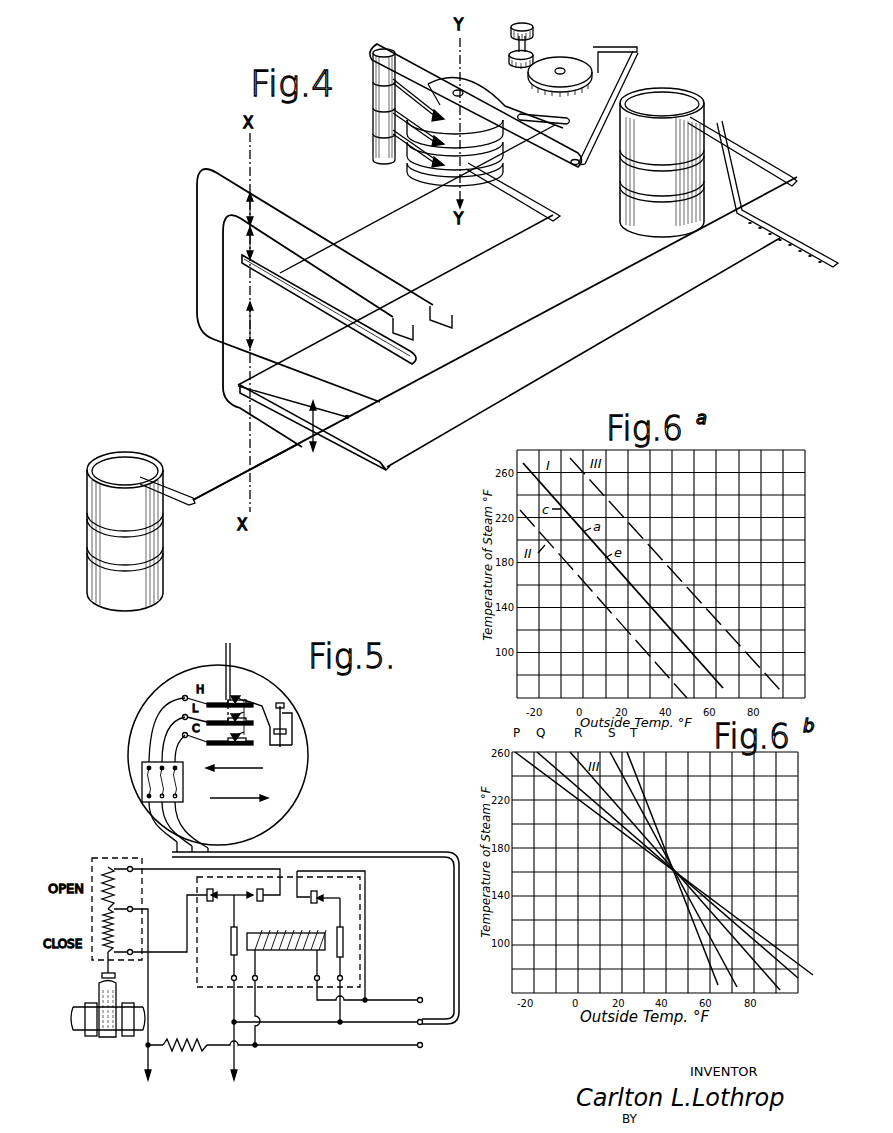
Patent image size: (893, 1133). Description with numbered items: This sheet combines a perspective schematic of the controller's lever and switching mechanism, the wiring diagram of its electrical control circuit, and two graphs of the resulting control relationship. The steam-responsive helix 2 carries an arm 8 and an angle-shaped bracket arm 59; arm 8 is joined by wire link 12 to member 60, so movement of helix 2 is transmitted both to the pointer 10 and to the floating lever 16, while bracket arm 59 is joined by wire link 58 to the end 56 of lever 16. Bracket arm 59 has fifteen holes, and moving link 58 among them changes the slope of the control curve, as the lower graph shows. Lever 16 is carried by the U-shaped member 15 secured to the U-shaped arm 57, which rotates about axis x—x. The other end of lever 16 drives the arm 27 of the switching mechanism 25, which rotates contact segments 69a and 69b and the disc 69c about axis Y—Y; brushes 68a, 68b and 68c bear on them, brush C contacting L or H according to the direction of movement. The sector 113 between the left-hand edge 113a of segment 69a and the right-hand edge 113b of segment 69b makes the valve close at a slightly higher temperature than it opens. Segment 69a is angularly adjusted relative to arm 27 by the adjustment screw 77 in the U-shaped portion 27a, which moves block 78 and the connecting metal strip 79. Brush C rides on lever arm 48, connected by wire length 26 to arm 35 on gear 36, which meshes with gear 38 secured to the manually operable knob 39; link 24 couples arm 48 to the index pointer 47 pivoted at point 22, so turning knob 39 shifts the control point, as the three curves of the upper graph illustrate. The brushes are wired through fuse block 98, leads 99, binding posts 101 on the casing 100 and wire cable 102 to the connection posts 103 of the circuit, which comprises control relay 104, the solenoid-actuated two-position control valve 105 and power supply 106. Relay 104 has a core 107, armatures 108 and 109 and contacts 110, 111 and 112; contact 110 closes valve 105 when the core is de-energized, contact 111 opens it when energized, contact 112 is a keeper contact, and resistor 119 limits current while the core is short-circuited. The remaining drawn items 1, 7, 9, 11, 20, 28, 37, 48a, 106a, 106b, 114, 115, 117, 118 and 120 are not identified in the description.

In FIG. 4, the bellows 1 is at (110, 452).
In FIG. 4, the helix 2 is at (474, 255).
In FIG. 4, the connecting strip 7 is at (176, 488).
In FIG. 4, the arm 8 is at (712, 127).
In FIG. 4, the frame top bar 9 is at (370, 270).
In FIG. 4, the pointer 10 is at (372, 302).
In FIG. 4, the plate edge 11 is at (256, 462).
In FIG. 4, the wire link 12 is at (570, 298).
In FIG. 4, the U-shaped member 15 is at (278, 430).
In FIG. 4, the floating lever 16 is at (354, 441).
In FIG. 4, the spacing dimension 20 is at (252, 223).
In FIG. 4, the pivot point 22 is at (252, 250).
In FIG. 4, the link 24 is at (373, 222).
In FIG. 4, the switching mechanism 25 is at (459, 54).
In FIG. 4, the wire length 26 is at (620, 78).
In FIG. 4, the arm 27 is at (530, 208).
In FIG. 5, the U-shaped portion 27a is at (294, 726).
In FIG. 4, the frame 28 is at (323, 226).
In FIG. 4, the arm 35 is at (614, 48).
In FIG. 4, the gear 36 is at (573, 60).
In FIG. 4, the hub 37 is at (561, 68).
In FIG. 4, the gear 38 is at (533, 56).
In FIG. 4, the knob 39 is at (530, 28).
In FIG. 4, the index pointer 47 is at (333, 310).
In FIG. 4, the lever arm 48 is at (505, 108).
In FIG. 4, the link 48a is at (560, 118).
In FIG. 4, the end of lever 56 is at (388, 469).
In FIG. 4, the U-shaped arm 57 is at (194, 262).
In FIG. 4, the wire link 58 is at (580, 345).
In FIG. 4, the bracket arm 59 is at (731, 170).
In FIG. 4, the member 60 is at (220, 243).
In FIG. 5, the brush 68a is at (182, 697).
In FIG. 5, the brush 68b is at (182, 716).
In FIG. 5, the brush 68c is at (182, 735).
In FIG. 4, the contact segment 69a is at (450, 112).
In FIG. 5, the contact segment 69a is at (242, 696).
In FIG. 4, the contact segment 69b is at (393, 146).
In FIG. 5, the contact segment 69b is at (197, 693).
In FIG. 4, the disc 69c is at (410, 165).
In FIG. 5, the disc 69c is at (212, 742).
In FIG. 4, the brush C is at (373, 102).
In FIG. 5, the adjustment screw 77 is at (284, 706).
In FIG. 5, the block 78 is at (287, 733).
In FIG. 5, the connecting metal strip 79 is at (265, 708).
In FIG. 5, the fuse block 98 is at (137, 782).
In FIG. 5, the leads 99 is at (163, 824).
In FIG. 5, the casing 100 is at (292, 815).
In FIG. 5, the binding posts 101 is at (210, 835).
In FIG. 5, the wire cable 102 is at (392, 857).
In FIG. 5, the connection posts 103 is at (423, 1045).
In FIG. 5, the control relay 104 is at (362, 910).
In FIG. 5, the control valve 105 is at (98, 994).
In FIG. 5, the power supply 106 is at (230, 1075).
In FIG. 5, the supply lead 106a is at (149, 1089).
In FIG. 5, the supply lead 106b is at (235, 1089).
In FIG. 5, the core 107 is at (292, 953).
In FIG. 5, the armature 108 is at (344, 942).
In FIG. 5, the armature 109 is at (231, 947).
In FIG. 5, the contact 110 is at (210, 902).
In FIG. 5, the contact 111 is at (260, 902).
In FIG. 5, the keeper contact 112 is at (314, 903).
In FIG. 5, the sector 113 is at (229, 643).
In FIG. 5, the left-hand edge 113a is at (233, 663).
In FIG. 5, the right-hand edge 113b is at (226, 656).
In FIG. 5, the solenoid coil 114 is at (117, 931).
In FIG. 5, the spring 115 is at (117, 885).
In FIG. 5, the down contact 117 is at (268, 801).
In FIG. 5, the up contact 118 is at (268, 772).
In FIG. 5, the resistor 119 is at (182, 1040).
In FIG. 5, the valve stem 120 is at (103, 918).